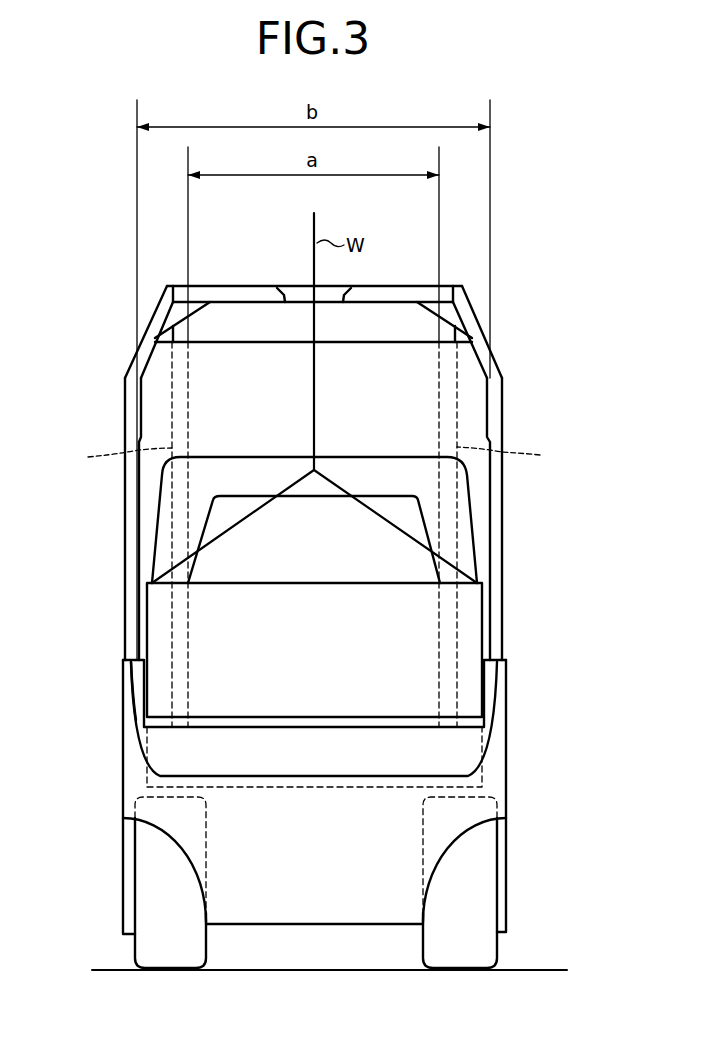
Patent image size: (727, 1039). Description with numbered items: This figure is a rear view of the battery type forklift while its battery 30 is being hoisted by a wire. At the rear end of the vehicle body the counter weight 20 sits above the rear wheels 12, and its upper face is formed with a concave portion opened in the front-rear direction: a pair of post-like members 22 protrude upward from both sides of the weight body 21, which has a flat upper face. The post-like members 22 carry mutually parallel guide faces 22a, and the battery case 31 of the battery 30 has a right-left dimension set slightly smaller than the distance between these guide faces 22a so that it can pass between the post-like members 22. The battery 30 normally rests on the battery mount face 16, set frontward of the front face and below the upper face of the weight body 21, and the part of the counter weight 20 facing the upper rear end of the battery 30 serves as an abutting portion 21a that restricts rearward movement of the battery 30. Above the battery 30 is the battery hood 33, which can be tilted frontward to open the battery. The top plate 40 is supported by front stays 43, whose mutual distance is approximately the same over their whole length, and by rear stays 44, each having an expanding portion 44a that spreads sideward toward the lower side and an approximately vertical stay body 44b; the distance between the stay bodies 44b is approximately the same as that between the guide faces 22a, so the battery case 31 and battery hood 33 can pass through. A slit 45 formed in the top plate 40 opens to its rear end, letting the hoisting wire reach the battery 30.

The rear wheel 12 is at (145, 947).
The battery mount face 16 is at (423, 780).
The counter weight 20 is at (526, 813).
The weight body 21 is at (362, 913).
The abutting portion 21a is at (234, 708).
The post-like member 22 is at (315, 797).
The guide face 22a is at (148, 702).
The battery 30 is at (369, 650).
The battery case 31 is at (470, 607).
The battery hood 33 is at (162, 520).
The top plate 40 is at (413, 286).
The front stay 43 is at (314, 456).
The rear stay 44 is at (314, 473).
The expanding portion 44a is at (148, 337).
The stay body 44b is at (314, 519).
The slit 45 is at (284, 288).